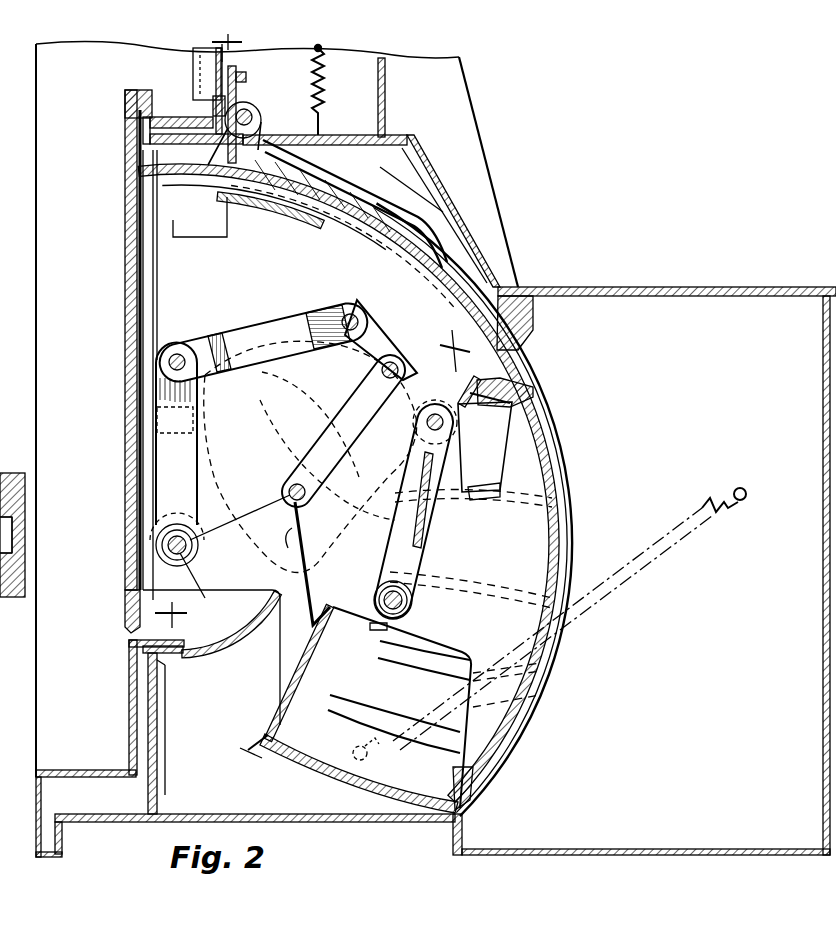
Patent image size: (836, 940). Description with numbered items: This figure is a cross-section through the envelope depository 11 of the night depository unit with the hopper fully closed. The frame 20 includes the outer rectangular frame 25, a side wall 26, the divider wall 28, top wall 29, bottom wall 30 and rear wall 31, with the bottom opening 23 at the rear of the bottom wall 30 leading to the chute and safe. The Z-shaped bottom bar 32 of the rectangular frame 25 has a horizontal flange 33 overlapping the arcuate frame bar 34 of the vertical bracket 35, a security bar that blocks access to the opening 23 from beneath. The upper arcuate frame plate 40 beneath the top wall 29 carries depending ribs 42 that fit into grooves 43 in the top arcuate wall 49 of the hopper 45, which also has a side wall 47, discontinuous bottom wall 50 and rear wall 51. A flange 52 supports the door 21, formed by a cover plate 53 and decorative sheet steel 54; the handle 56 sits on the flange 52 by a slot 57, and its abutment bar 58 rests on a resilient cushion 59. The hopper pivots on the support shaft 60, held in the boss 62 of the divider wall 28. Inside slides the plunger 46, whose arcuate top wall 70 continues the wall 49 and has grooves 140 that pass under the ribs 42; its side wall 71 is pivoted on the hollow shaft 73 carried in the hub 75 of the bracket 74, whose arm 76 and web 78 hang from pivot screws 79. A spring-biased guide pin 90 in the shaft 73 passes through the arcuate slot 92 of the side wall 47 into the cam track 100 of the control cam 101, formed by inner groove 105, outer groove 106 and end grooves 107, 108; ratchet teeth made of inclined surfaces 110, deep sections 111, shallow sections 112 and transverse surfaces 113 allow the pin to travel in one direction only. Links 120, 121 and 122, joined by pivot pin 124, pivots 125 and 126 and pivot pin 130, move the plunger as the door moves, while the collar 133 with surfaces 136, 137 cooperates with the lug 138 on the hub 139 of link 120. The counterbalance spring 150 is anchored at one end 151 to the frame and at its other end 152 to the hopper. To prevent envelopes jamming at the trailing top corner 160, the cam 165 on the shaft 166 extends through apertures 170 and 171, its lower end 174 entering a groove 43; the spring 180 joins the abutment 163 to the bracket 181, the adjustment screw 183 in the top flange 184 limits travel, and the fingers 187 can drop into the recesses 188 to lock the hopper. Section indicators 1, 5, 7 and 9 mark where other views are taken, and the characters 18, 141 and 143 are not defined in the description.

The section line 1 is at (171, 627).
The section line 5 is at (5, 110).
The section line 7 is at (235, 43).
The section line 9 is at (351, 552).
The envelope depository 11 is at (638, 155).
The support 18 is at (11, 352).
The frame 20 is at (615, 277).
The envelope depository hopper door 21 is at (117, 354).
The bottom opening 23 is at (574, 840).
The outer rectangular frame 25 is at (26, 789).
The side wall 26 is at (699, 651).
The divider wall 28 is at (0, 184).
The top wall 29 is at (410, 137).
The bottom wall 30 is at (396, 832).
The rear wall 31 is at (820, 586).
The bottom horizontal bar 32 is at (38, 834).
The horizontal flange 33 is at (126, 642).
The arcuate frame bar 34 is at (234, 639).
The vertical bracket 35 is at (166, 717).
The upper arcuate frame plate 40 is at (460, 240).
The depending ribs 42 is at (530, 323).
The grooves 43 is at (356, 230).
The hopper 45 is at (554, 392).
The plunger 46 is at (568, 522).
The side wall 47 is at (348, 483).
The top arcuate wall 49 is at (400, 244).
The discontinuous bottom wall 50 is at (322, 668).
The rear wall 51 is at (326, 774).
The flange 52 is at (125, 174).
The cover plate 53 is at (144, 289).
The decorative sheet steel 54 is at (126, 278).
The handle 56 is at (126, 90).
The slot 57 is at (125, 103).
The abutment bar 58 is at (170, 106).
The resilient cushion 59 is at (176, 97).
The support shaft 60 is at (186, 562).
The boss 62 is at (12, 426).
The arcuate top wall 70 is at (530, 700).
The side wall 71 is at (483, 546).
The hollow shaft 73 is at (414, 612).
The supporting bracket 74 is at (445, 522).
The central hub section 75 is at (374, 614).
The side wall 76 is at (444, 466).
The web 78 is at (412, 543).
The screws 79 is at (450, 427).
The guide pin 90 is at (424, 597).
The arcuate slot 92 is at (284, 543).
The cam track 100 is at (280, 334).
The control cam 101 is at (234, 468).
The inner arcuate groove 105 is at (310, 456).
The outer arcuate groove 106 is at (314, 399).
The end groove 107 is at (327, 460).
The end groove 108 is at (256, 402).
The inclined surfaces 110 is at (355, 442).
The deep sections 111 is at (352, 352).
The shallow sections 112 is at (382, 378).
The transverse arcuate surface 113 is at (304, 444).
The link 120 is at (160, 475).
The link 121 is at (230, 332).
The bellcrank shaped link 122 is at (407, 343).
The pivot pin 124 is at (178, 356).
The pivot 125 is at (352, 314).
The pivot 126 is at (290, 501).
The pivot pin 130 is at (464, 370).
The collar 133 is at (126, 578).
The flat radial surface 136 is at (144, 537).
The flat radial surface 137 is at (197, 544).
The lug 138 is at (200, 520).
The hub 139 is at (196, 586).
The grooves 140 is at (564, 474).
The arm 141 is at (167, 519).
The bushing 143 is at (200, 536).
The tension spring 150 is at (731, 510).
The spring anchor pin 151 is at (750, 493).
The spring end 152 is at (370, 760).
The trailing top corner 160 is at (526, 402).
The locking abutment 163 is at (376, 182).
The bellcrank shaped cam 165 is at (218, 176).
The support shaft 166 is at (256, 116).
The apertures 170 is at (310, 158).
The apertures 171 is at (274, 188).
The lower end 174 is at (181, 176).
The tension spring 180 is at (325, 73).
The bracket 181 is at (323, 47).
The adjustment screw 183 is at (251, 82).
The top flange 184 is at (238, 69).
The depending fingers 187 is at (436, 212).
The recesses 188 is at (533, 668).